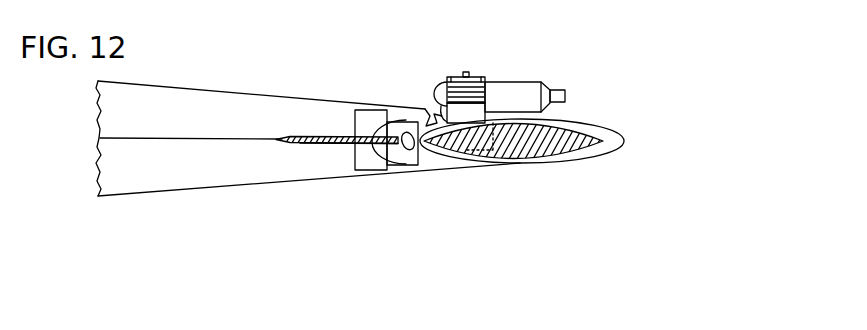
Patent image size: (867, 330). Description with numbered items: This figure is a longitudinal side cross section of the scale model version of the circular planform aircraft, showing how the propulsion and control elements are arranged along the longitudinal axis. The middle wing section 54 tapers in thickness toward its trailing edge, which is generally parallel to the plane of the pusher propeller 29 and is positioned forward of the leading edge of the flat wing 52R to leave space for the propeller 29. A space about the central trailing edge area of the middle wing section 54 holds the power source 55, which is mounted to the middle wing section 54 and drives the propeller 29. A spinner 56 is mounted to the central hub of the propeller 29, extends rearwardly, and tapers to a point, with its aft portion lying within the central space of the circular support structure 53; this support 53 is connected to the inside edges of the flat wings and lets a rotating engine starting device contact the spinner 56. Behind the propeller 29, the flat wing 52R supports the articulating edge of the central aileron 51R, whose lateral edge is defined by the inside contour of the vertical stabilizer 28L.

The vertical stabilizer 28L is at (232, 165).
The central aileron 51R is at (320, 136).
The flat wing 52R is at (342, 145).
The circular support structure 53 is at (371, 165).
The spinner 56 is at (398, 127).
The pusher propeller 29 is at (410, 148).
The power source 55 is at (472, 76).
The middle wing section 54 is at (608, 137).